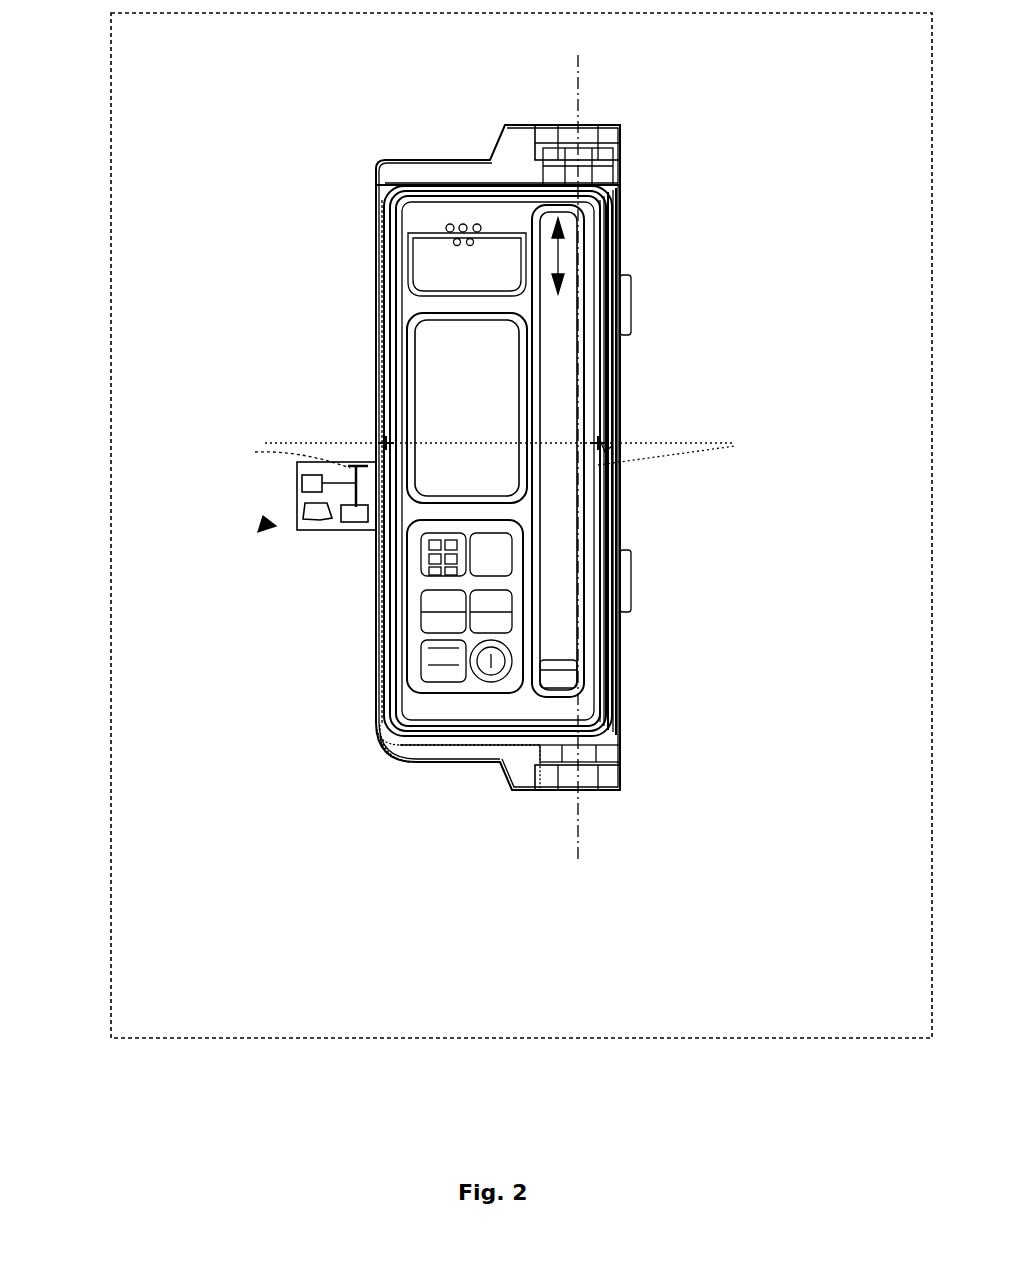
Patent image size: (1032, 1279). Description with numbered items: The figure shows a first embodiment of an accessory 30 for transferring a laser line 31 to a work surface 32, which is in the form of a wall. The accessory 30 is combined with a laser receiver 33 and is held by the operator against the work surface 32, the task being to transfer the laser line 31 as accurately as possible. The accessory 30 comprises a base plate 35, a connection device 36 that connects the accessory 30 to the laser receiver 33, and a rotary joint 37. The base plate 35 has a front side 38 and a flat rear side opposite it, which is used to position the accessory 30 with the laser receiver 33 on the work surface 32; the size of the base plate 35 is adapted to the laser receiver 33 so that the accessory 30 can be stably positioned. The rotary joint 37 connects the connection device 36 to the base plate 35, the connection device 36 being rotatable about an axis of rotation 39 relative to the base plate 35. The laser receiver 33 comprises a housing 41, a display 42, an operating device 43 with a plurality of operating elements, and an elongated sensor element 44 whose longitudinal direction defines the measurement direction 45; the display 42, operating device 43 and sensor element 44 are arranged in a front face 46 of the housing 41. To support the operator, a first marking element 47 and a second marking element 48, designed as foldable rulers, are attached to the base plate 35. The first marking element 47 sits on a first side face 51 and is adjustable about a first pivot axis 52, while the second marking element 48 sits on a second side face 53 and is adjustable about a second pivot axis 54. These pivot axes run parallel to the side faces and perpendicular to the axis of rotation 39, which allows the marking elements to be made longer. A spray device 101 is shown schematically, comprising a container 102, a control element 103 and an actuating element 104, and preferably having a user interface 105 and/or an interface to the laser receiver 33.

The accessory 30 is at (430, 150).
The laser line 31 is at (564, 441).
The work surface 32 is at (828, 975).
The laser receiver 33 is at (470, 715).
The base plate 35 is at (378, 742).
The connection device 36 is at (638, 653).
The rotary joint 37 is at (640, 148).
The front side 38 is at (405, 752).
The axis of rotation 39 is at (583, 80).
The housing 41 is at (375, 246).
The display 42 is at (420, 346).
The operating device 43 is at (415, 615).
The sensor element 44 is at (570, 325).
The measurement direction 45 is at (568, 235).
The front face 46 is at (522, 704).
The first marking element 47 is at (268, 452).
The second marking element 48 is at (715, 450).
The first side face 51 is at (378, 380).
The first pivot axis 52 is at (388, 440).
The second side face 53 is at (620, 383).
The second pivot axis 54 is at (600, 440).
The spray device 101 is at (273, 527).
The container 102 is at (302, 483).
The control element 103 is at (347, 520).
The actuating element 104 is at (348, 467).
The user interface 105 is at (306, 515).